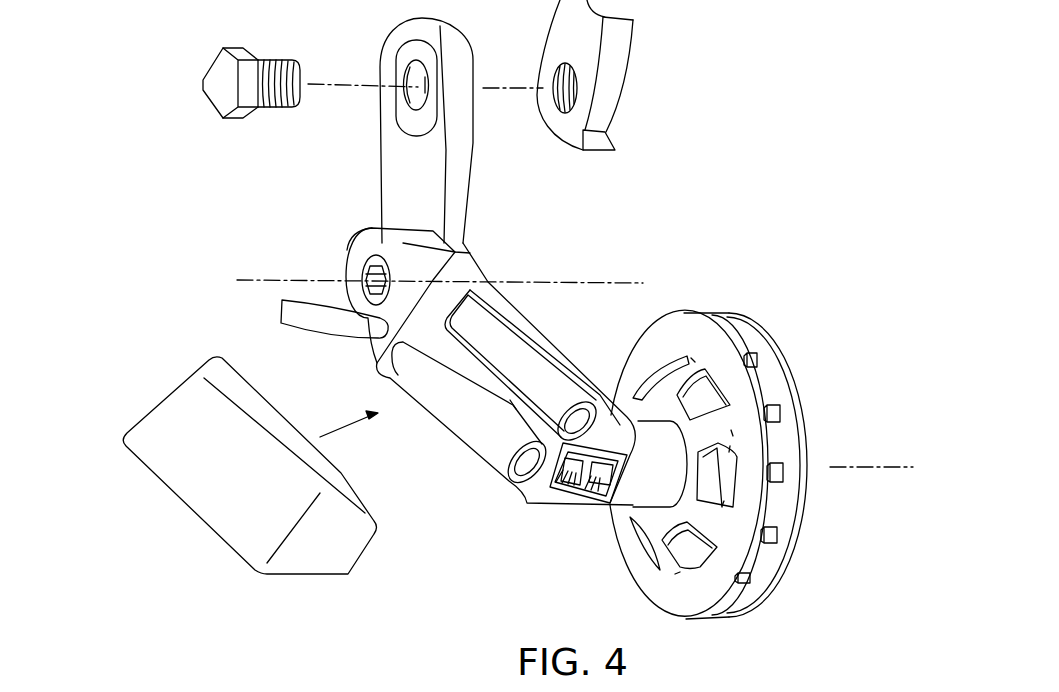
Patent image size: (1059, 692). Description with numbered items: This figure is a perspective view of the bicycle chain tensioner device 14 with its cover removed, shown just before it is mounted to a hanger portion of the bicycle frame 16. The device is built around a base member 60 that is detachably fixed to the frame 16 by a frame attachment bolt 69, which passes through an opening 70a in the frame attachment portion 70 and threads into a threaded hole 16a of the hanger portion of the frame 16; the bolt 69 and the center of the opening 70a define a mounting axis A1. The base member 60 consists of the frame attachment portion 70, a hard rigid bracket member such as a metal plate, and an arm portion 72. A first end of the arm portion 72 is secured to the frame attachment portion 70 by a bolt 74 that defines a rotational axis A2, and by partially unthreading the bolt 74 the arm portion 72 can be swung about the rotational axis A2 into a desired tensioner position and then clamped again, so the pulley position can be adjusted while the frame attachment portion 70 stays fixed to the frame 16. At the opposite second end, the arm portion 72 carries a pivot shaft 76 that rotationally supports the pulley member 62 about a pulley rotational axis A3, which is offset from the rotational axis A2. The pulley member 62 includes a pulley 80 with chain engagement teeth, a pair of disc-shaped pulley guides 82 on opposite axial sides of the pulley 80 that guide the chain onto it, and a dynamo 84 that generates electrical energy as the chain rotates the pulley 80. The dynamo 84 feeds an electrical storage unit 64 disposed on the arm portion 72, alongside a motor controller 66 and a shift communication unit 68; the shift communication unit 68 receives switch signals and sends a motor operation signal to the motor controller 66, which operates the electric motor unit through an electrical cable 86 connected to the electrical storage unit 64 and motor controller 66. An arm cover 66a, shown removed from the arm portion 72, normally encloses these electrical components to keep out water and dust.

The bicycle chain tensioner device 14 is at (452, 491).
The bicycle frame 16 is at (637, 50).
The threaded hole 16a is at (559, 77).
The base member 60 is at (525, 167).
The pulley member 62 is at (806, 326).
The electrical storage unit 64 is at (477, 340).
The motor controller 66 is at (575, 366).
The arm cover 66a is at (213, 500).
The shift communication unit 68 is at (588, 450).
The frame attachment bolt 69 is at (268, 110).
The frame attachment portion 70 is at (453, 167).
The opening 70a is at (414, 98).
The arm portion 72 is at (486, 274).
The bolt 74 is at (366, 263).
The pivot shaft 76 is at (657, 493).
The pulley 80 is at (778, 410).
The pulley guides 82 is at (768, 500).
The dynamo 84 is at (708, 556).
The electrical cable 86 is at (313, 337).
The mounting axis A1 is at (357, 84).
The rotational axis A2 is at (258, 279).
The pulley rotational axis A3 is at (893, 467).